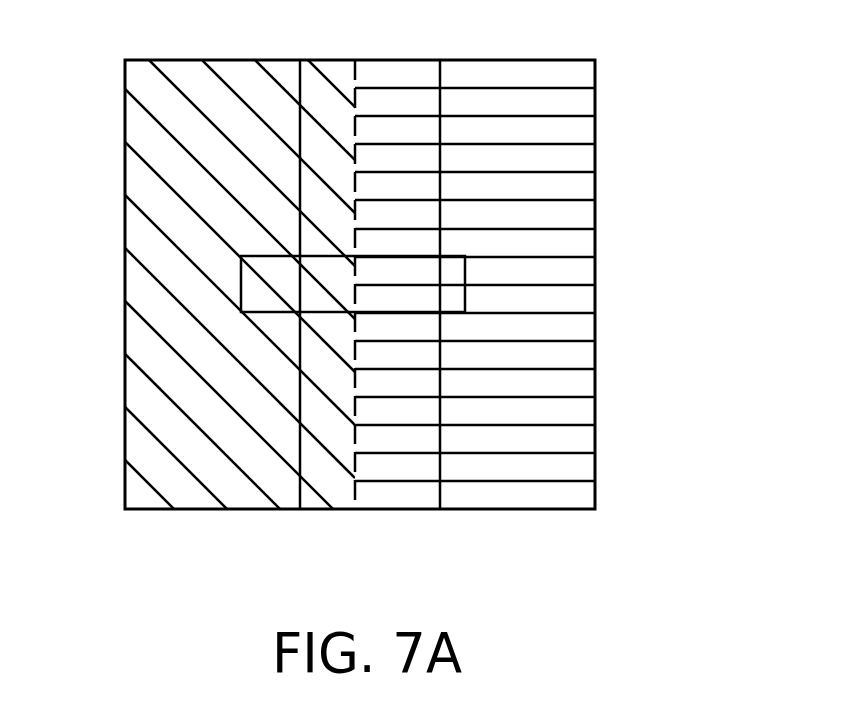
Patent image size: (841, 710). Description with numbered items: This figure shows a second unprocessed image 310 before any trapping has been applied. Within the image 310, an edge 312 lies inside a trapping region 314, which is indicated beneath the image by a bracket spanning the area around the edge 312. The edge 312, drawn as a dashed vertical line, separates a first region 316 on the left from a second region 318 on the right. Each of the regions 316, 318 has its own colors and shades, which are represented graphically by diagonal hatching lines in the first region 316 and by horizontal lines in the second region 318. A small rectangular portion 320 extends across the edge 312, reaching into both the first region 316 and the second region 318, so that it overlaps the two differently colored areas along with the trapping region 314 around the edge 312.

The unprocessed image 310 is at (683, 40).
The edge 312 is at (353, 76).
The trapping region 314 is at (440, 517).
The first region 316 is at (148, 80).
The second region 318 is at (582, 135).
The portion 320 is at (468, 273).